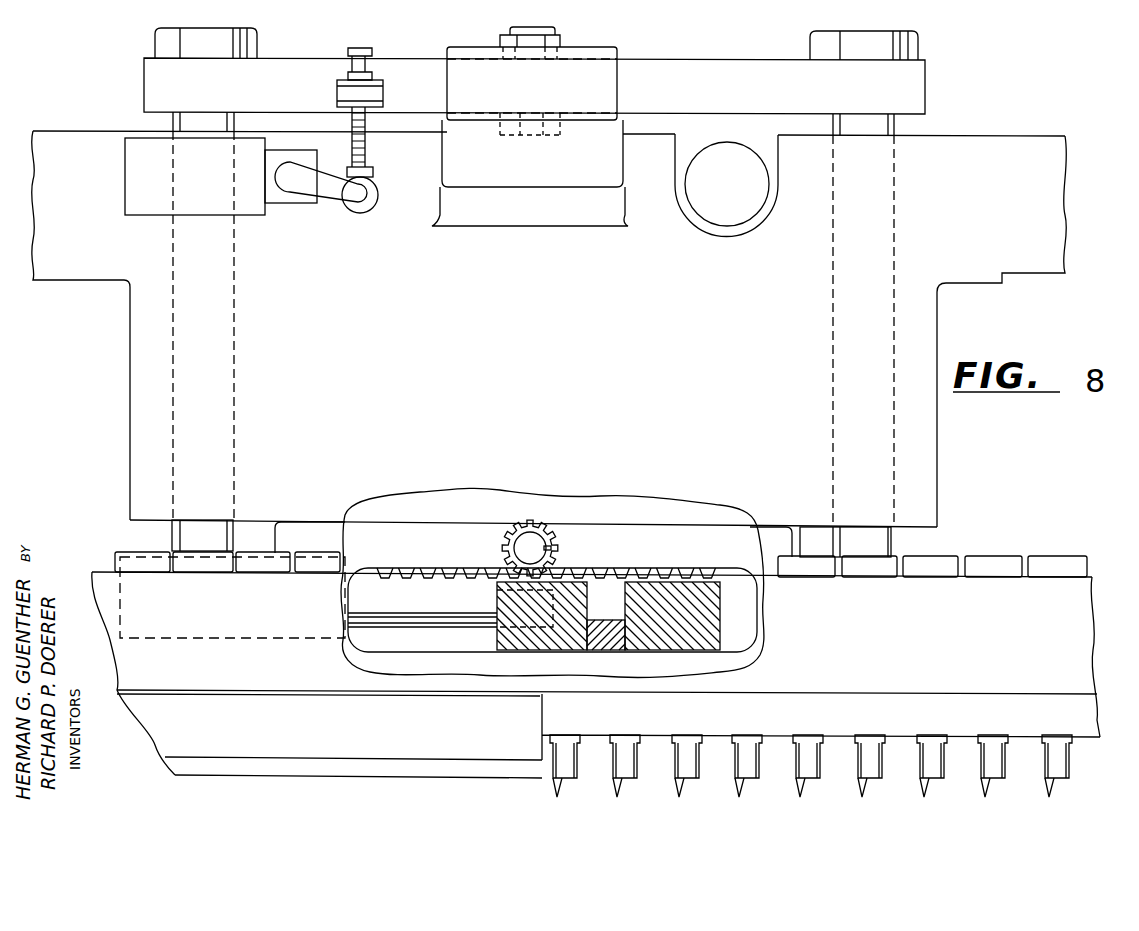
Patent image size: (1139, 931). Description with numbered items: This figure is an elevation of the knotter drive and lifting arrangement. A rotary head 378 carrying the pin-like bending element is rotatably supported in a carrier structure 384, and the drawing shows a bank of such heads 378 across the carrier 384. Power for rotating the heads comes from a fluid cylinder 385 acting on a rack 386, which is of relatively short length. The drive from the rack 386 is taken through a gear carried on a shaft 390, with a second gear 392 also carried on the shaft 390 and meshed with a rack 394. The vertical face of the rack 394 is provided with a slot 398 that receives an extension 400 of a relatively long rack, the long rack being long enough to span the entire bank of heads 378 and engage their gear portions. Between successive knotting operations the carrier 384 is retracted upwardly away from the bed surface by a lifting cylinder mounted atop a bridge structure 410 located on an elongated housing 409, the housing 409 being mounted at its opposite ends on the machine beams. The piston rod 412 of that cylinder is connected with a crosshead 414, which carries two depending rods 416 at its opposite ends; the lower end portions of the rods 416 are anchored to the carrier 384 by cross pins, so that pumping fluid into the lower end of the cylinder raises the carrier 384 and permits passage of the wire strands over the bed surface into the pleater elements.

The rotary head 378 is at (580, 770).
The carrier structure 384 is at (1038, 593).
The fluid cylinder 385 is at (198, 640).
The rack 386 is at (396, 612).
The shaft 390 is at (531, 546).
The second gear 392 is at (522, 532).
The rack 394 is at (528, 640).
The slot 398 is at (622, 580).
The extension 400 is at (612, 640).
The elongated housing 409 is at (530, 335).
The bridge structure 410 is at (595, 88).
The piston rod 412 is at (556, 31).
The crosshead 414 is at (728, 75).
The depending rods 416 is at (172, 124).